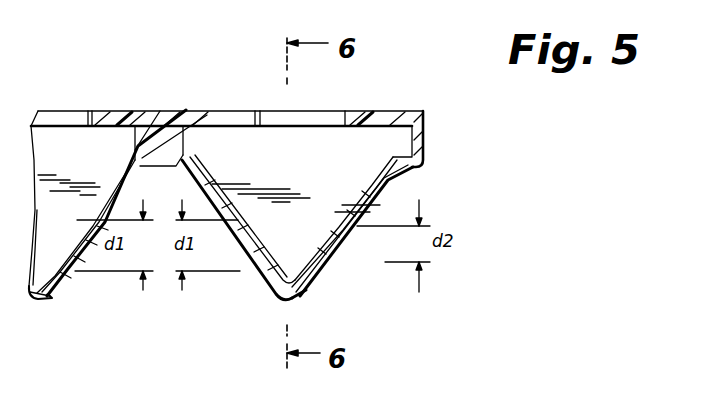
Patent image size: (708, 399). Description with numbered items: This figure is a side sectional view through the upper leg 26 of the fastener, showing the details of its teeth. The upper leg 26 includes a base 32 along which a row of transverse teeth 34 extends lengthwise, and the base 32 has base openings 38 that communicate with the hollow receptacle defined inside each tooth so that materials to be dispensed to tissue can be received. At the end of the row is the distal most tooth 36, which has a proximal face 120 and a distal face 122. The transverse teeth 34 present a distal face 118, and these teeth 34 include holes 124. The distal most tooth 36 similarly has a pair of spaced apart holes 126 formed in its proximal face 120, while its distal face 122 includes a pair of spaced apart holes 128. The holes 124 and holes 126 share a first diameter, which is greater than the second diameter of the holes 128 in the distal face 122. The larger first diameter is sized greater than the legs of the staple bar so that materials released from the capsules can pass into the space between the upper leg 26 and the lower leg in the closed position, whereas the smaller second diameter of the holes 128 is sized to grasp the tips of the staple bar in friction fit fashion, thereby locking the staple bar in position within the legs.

The upper leg 26 is at (50, 72).
The base openings 38 is at (76, 118).
The base 32 is at (430, 117).
The distal most tooth 36 is at (388, 190).
The holes 124 is at (82, 246).
The distal face 118 is at (56, 301).
The transverse teeth 34 is at (38, 300).
The holes 126 is at (250, 213).
The proximal face 120 is at (266, 288).
The holes 128 is at (325, 247).
The distal face 122 is at (303, 290).